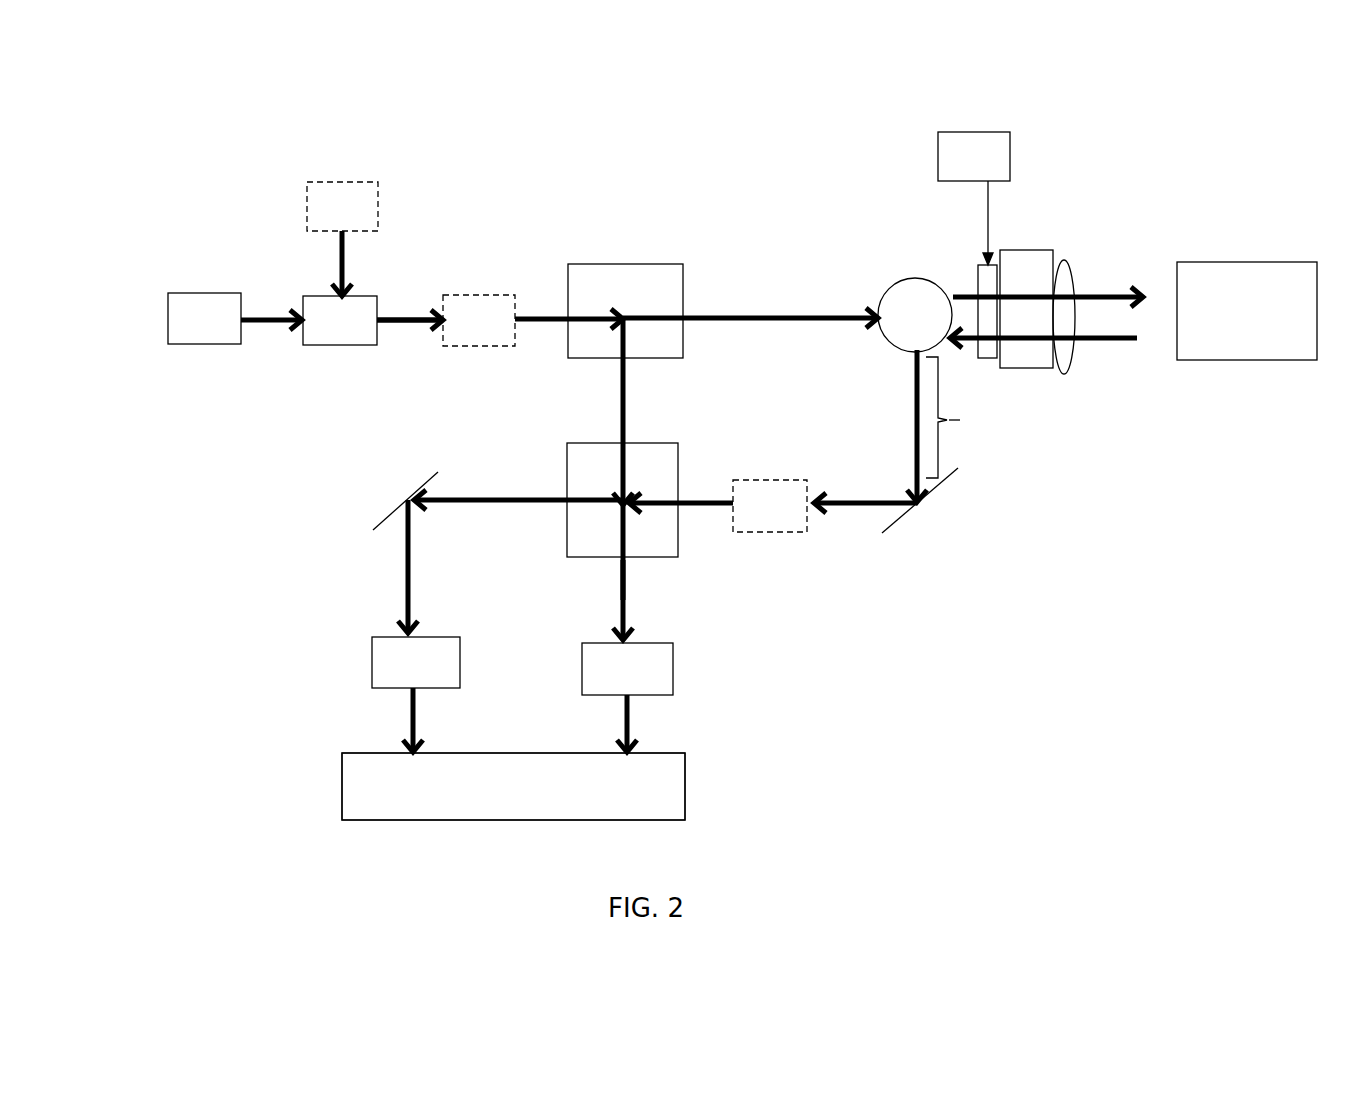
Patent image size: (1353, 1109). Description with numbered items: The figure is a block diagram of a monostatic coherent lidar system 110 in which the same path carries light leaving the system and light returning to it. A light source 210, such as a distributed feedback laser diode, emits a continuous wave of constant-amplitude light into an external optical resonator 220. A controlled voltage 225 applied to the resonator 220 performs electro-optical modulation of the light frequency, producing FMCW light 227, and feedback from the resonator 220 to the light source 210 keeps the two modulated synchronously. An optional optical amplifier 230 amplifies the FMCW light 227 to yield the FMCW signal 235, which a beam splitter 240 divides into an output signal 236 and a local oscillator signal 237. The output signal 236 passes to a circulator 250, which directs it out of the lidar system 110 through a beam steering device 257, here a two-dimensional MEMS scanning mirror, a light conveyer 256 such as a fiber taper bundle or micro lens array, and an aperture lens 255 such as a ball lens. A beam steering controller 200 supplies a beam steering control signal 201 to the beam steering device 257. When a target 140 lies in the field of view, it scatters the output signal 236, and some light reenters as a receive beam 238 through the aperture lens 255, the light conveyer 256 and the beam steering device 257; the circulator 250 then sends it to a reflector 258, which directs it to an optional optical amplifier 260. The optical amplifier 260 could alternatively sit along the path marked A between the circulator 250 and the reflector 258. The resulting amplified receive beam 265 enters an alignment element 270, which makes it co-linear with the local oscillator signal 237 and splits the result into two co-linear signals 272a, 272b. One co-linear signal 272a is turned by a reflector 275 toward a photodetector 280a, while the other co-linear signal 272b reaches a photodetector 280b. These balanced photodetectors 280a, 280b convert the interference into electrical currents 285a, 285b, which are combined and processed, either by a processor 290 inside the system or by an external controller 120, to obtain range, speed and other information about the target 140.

The coherent lidar system 110 is at (156, 226).
The light source 210 is at (180, 335).
The optical resonator 220 is at (316, 335).
The controlled voltage 225 is at (318, 224).
The optical amplifier 230 is at (455, 335).
The FMCW light 227 is at (405, 323).
The FMCW signal 235 is at (540, 318).
The beam splitter 240 is at (655, 262).
The output signal 236 is at (735, 318).
The local oscillator signal 237 is at (630, 400).
The circulator 250 is at (910, 279).
The beam steering controller 200 is at (950, 172).
The beam steering control signal 201 is at (988, 205).
The beam steering device 257 is at (990, 360).
The light conveyer 256 is at (1030, 250).
The aperture lens 255 is at (1047, 252).
The target 140 is at (1223, 325).
The receive beam 238 is at (1105, 338).
The path A is at (960, 417).
The reflector 258 is at (950, 478).
The optical amplifier 260 is at (746, 521).
The amplified receive beam 265 is at (703, 505).
The alignment element 270 is at (565, 470).
The co-linear signal 272a is at (480, 503).
The co-linear signal 272b is at (628, 582).
The reflector 275 is at (393, 510).
The photodetector 280a is at (384, 679).
The photodetector 280b is at (660, 687).
The electrical current 285a is at (410, 713).
The electrical current 285b is at (628, 718).
The controller 120 is at (470, 807).
The processor 290 is at (575, 807).